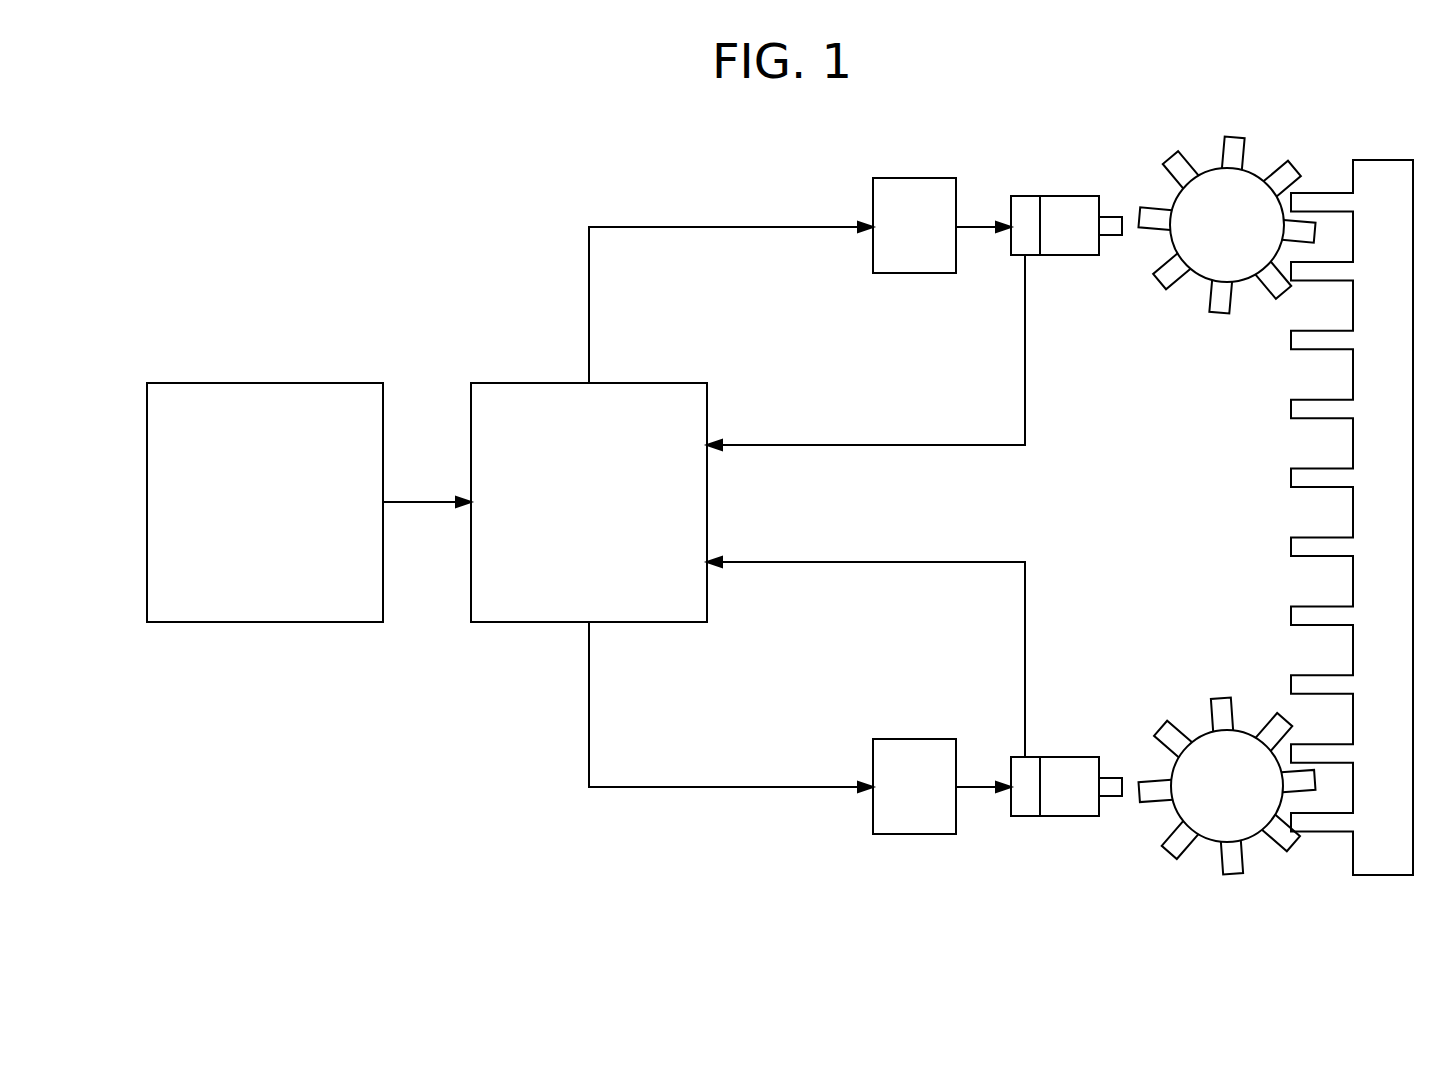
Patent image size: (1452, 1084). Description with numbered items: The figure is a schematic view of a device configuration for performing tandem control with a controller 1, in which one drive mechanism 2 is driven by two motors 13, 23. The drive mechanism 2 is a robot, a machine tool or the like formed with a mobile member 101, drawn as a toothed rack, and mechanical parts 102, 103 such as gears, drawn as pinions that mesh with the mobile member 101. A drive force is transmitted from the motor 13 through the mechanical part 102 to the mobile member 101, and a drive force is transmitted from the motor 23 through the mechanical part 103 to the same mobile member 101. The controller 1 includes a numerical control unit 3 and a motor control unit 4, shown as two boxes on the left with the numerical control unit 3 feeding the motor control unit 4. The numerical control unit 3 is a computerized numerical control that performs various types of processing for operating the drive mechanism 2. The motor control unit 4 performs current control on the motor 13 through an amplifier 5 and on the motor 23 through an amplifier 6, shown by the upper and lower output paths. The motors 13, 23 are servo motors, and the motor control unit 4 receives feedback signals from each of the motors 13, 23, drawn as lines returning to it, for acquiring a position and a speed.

The controller 1 is at (297, 296).
The drive mechanism 2 is at (1278, 913).
The numerical control unit 3 is at (355, 383).
The motor control unit 4 is at (680, 383).
The amplifier 5 is at (915, 178).
The amplifier 6 is at (915, 739).
The motor 13 is at (1078, 196).
The motor 23 is at (1078, 757).
The mobile member 101 is at (1393, 160).
The mechanical part 102 is at (1248, 168).
The mechanical part 103 is at (1248, 730).